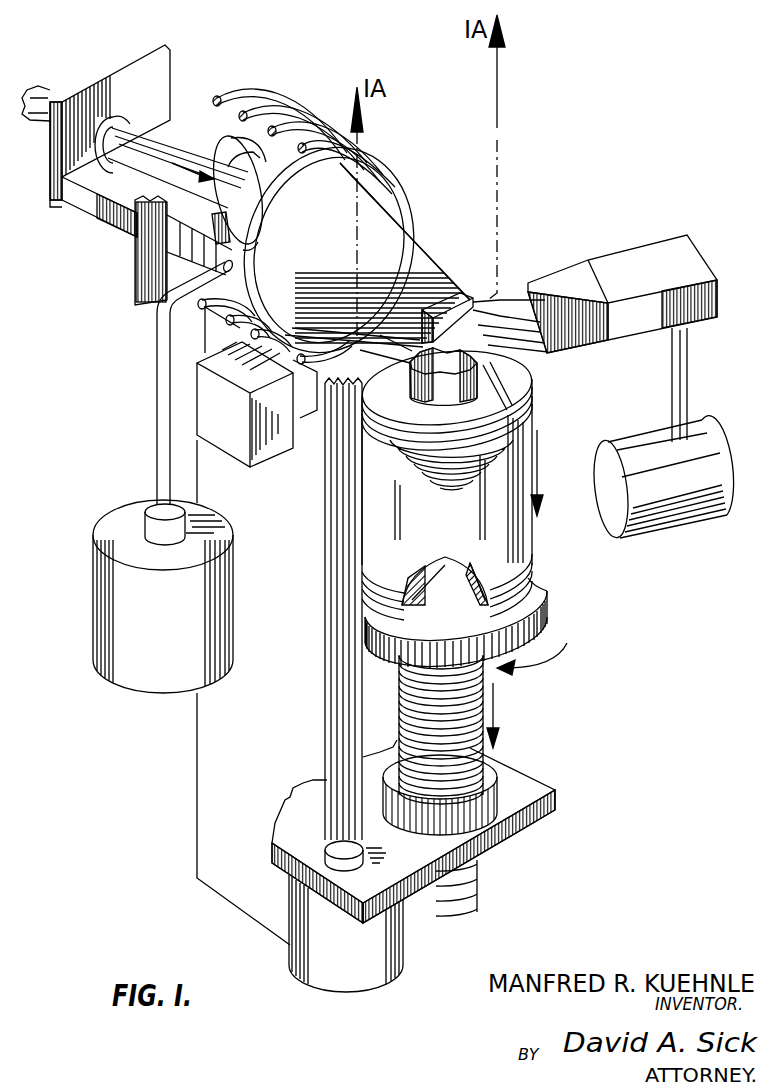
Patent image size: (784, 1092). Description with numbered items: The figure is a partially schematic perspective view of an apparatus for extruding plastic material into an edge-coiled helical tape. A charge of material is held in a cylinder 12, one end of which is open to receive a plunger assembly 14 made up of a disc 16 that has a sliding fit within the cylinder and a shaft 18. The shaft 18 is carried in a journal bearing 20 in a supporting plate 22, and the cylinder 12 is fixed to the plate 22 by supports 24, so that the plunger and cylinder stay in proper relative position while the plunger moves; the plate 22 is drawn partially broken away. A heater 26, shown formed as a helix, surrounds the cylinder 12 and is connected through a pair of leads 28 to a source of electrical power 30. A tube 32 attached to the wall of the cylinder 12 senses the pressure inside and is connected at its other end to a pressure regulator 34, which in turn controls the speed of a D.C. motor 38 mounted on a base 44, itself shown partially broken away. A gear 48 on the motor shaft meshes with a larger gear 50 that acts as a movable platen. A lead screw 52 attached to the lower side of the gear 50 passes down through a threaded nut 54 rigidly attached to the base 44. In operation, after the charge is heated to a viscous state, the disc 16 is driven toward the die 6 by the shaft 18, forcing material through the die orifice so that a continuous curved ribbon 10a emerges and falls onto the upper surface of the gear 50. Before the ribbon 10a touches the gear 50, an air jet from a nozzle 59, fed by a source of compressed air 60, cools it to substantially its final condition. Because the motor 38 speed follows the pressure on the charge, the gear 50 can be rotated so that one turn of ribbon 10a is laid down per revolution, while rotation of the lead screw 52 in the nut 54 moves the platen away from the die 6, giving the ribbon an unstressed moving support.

The die 6 is at (458, 290).
The ribbon 10a is at (512, 383).
The cylinder 12 is at (315, 246).
The plunger assembly 14 is at (146, 154).
The disc 16 is at (233, 190).
The shaft 18 is at (183, 143).
The journal bearing 20 is at (120, 120).
The supporting plate 22 is at (141, 54).
The supports 24 is at (80, 213).
The heater 26 is at (300, 125).
The leads 28 is at (205, 315).
The source of electrical power 30 is at (230, 445).
The tube 32 is at (160, 400).
The pressure regulator 34 is at (135, 685).
The D.C. motor 38 is at (348, 975).
The base 44 is at (398, 863).
The gear 48 is at (330, 680).
The gear 50 is at (548, 605).
The lead screw 52 is at (500, 682).
The threaded nut 54 is at (505, 762).
The nozzle 59 is at (635, 265).
The source of compressed air 60 is at (698, 446).